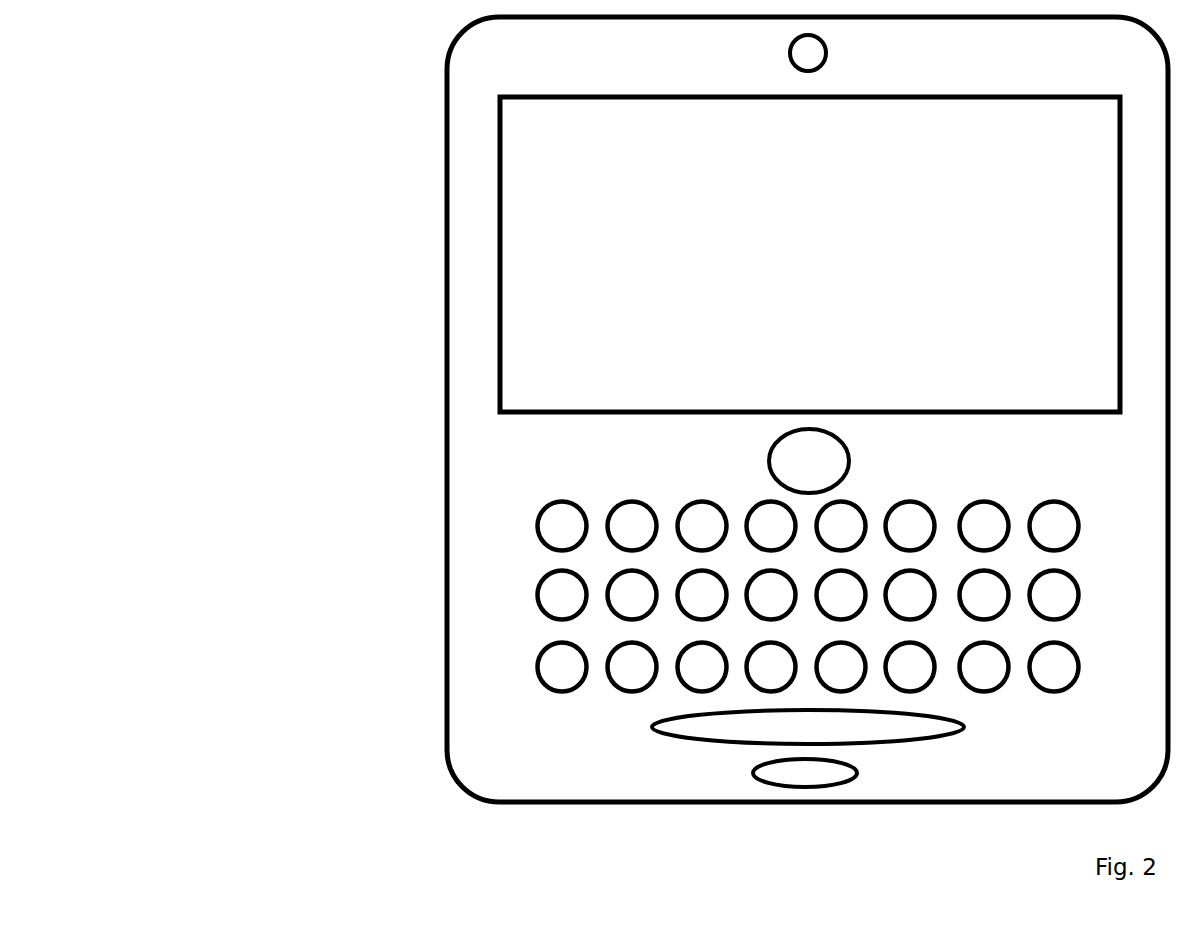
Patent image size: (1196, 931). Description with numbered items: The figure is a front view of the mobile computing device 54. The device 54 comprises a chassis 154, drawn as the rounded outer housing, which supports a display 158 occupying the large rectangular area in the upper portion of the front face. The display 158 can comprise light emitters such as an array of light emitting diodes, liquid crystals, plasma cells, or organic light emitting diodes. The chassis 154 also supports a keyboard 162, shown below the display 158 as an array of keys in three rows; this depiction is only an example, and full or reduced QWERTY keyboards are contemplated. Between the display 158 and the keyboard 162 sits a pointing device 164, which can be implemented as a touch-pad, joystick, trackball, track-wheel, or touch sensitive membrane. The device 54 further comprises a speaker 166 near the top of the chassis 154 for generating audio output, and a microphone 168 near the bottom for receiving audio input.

The mobile computing device 54 is at (262, 728).
The chassis 154 is at (430, 380).
The display 158 is at (486, 251).
The keyboard 162 is at (484, 613).
The pointing device 164 is at (750, 457).
The speaker 166 is at (776, 50).
The microphone 168 is at (735, 775).